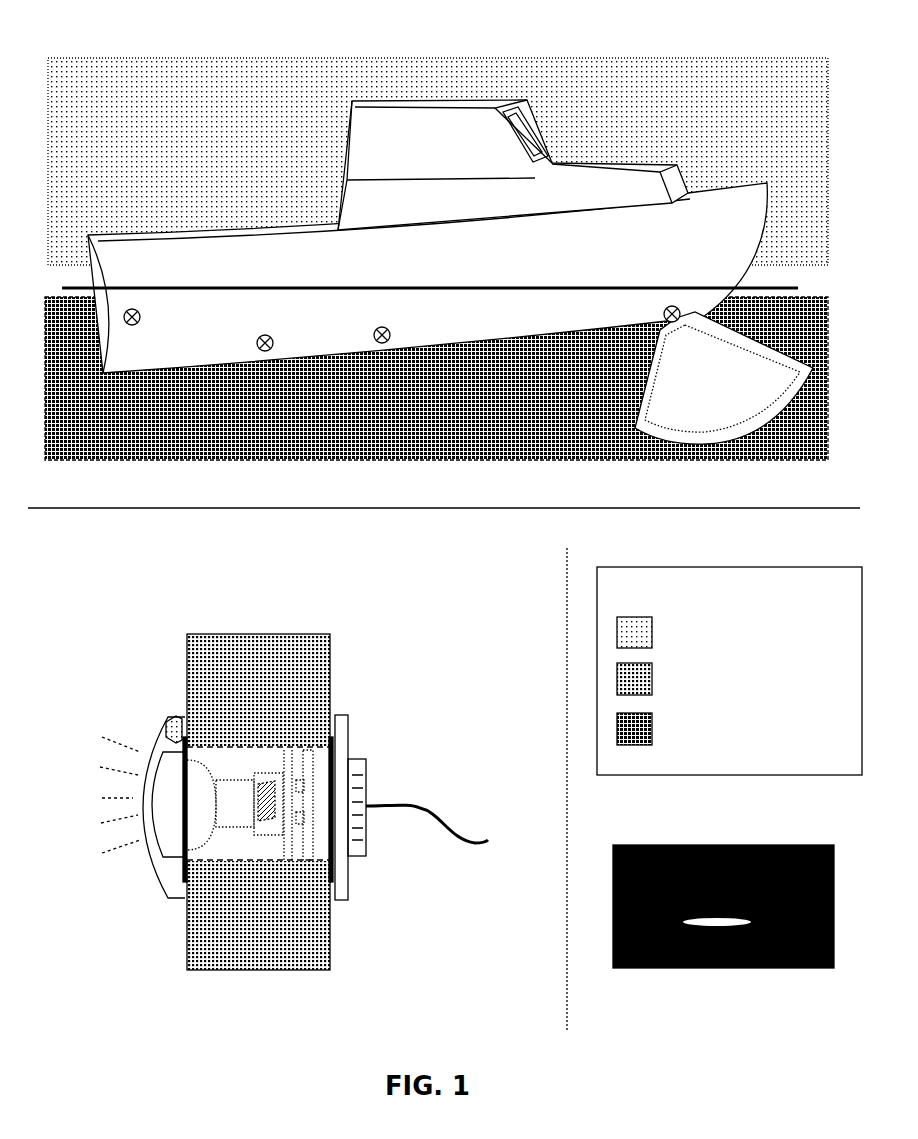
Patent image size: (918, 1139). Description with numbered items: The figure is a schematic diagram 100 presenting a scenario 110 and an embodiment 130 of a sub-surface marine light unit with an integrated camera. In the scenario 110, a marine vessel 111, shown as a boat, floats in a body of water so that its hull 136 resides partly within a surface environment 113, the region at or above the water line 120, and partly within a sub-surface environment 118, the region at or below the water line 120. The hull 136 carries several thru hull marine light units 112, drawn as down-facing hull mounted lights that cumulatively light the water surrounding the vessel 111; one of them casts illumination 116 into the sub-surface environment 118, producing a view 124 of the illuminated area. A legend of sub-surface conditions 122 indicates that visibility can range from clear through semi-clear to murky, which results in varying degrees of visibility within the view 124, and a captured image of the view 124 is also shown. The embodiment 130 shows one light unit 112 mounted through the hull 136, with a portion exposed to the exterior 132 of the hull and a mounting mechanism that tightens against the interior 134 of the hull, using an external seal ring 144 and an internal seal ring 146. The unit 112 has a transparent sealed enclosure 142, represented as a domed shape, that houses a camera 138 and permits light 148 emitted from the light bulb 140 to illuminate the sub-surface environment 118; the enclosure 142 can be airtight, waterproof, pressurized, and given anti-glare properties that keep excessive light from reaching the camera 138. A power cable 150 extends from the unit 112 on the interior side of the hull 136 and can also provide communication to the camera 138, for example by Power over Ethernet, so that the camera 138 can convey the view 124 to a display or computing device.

The system overview 100 is at (820, 12).
The scenario 110 is at (145, 28).
The marine vessel 111 is at (349, 146).
The thru hull marine light unit 112 is at (665, 318).
The surface environment 113 is at (438, 161).
The illumination 116 is at (640, 400).
The sub-surface environment 118 is at (436, 378).
The water line 120 is at (796, 288).
The sub-surface conditions 122 is at (848, 590).
The view 124 is at (728, 845).
The embodiment 130 is at (398, 568).
The exterior 132 is at (187, 658).
The interior 134 is at (331, 665).
The hull 136 is at (346, 637).
The camera 138 is at (166, 728).
The light bulb 140 is at (147, 860).
The transparent sealed enclosure 142 is at (163, 893).
The external seal ring 144 is at (185, 884).
The internal seal ring 146 is at (331, 705).
The light 148 is at (122, 797).
The power cable 150 is at (458, 834).